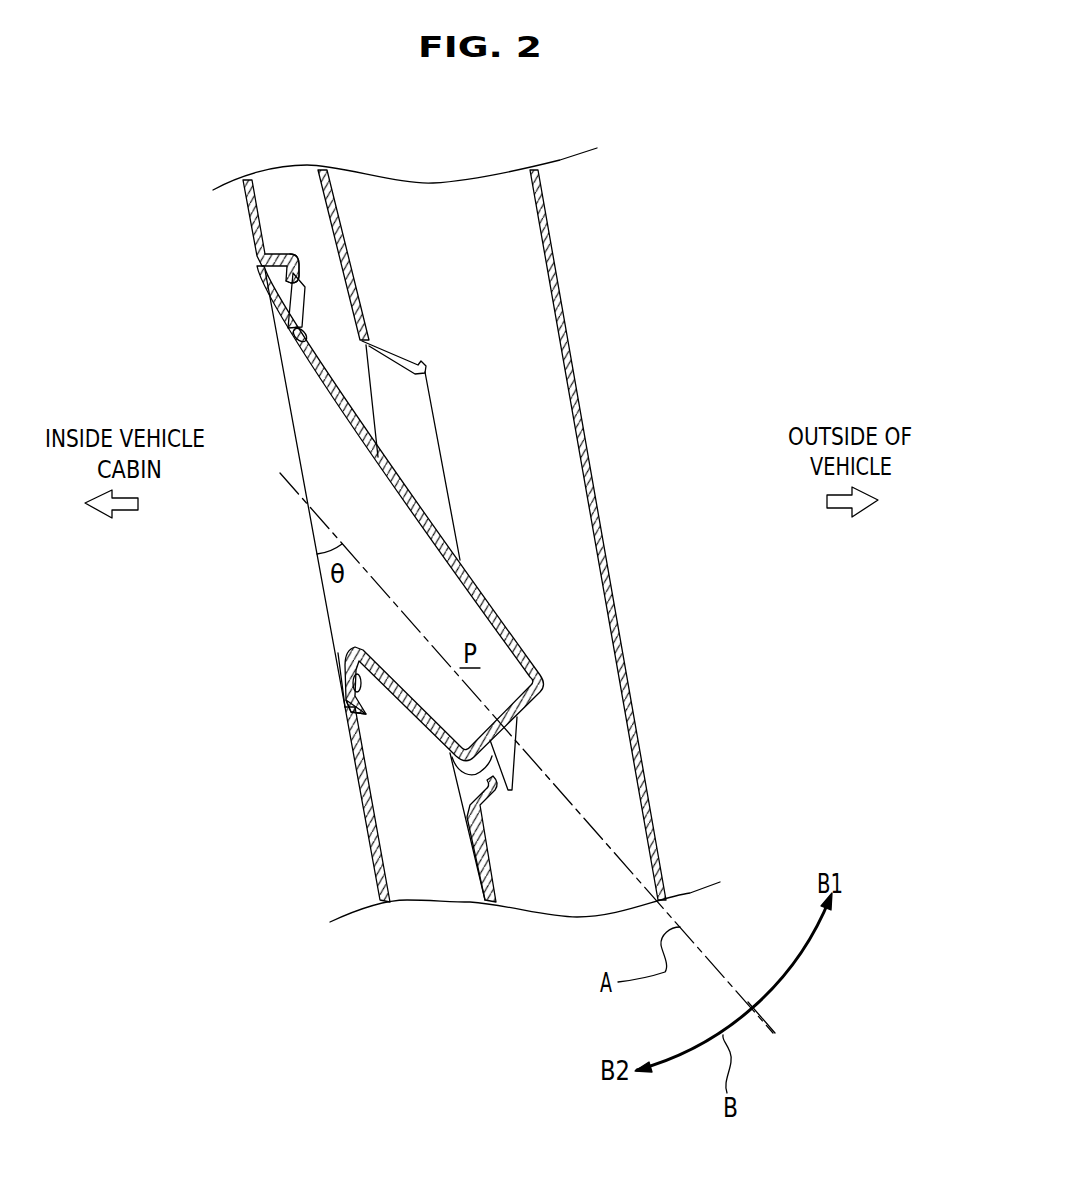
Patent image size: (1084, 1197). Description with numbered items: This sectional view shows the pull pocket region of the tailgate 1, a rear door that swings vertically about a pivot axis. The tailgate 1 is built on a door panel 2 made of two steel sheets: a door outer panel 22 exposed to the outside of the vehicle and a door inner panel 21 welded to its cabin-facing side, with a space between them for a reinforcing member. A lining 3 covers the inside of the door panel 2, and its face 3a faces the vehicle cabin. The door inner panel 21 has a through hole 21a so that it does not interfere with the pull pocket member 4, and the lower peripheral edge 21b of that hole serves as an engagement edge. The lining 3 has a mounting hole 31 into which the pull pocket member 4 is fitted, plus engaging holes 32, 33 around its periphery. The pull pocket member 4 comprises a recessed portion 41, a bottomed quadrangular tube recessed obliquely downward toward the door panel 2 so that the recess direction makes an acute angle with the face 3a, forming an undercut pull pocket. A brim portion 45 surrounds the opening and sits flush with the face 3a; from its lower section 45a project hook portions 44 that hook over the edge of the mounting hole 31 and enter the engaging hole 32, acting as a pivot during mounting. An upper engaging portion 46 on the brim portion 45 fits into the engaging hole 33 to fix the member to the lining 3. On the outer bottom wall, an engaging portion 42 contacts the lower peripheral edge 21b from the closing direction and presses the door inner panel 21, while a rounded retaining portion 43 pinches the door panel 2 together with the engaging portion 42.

The tailgate 1 is at (459, 149).
The door panel 2 is at (444, 559).
The door inner panel 21 is at (417, 559).
The through hole 21a is at (395, 360).
The lower peripheral edge 21b is at (490, 797).
The door outer panel 22 is at (612, 250).
The lining 3 is at (286, 541).
The face of the lining 3a is at (249, 215).
The mounting hole 31 is at (340, 650).
The engaging hole 32 is at (356, 714).
The engaging hole 33 is at (288, 274).
The pull pocket member 4 is at (434, 612).
The recessed portion 41 is at (500, 618).
The engaging portion 42 is at (523, 752).
The retaining portion 43 is at (460, 768).
The hook portion 44 is at (347, 700).
The brim portion 45 is at (283, 302).
The lower section of the brim portion 45a is at (350, 684).
The upper engaging portion 46 is at (296, 332).